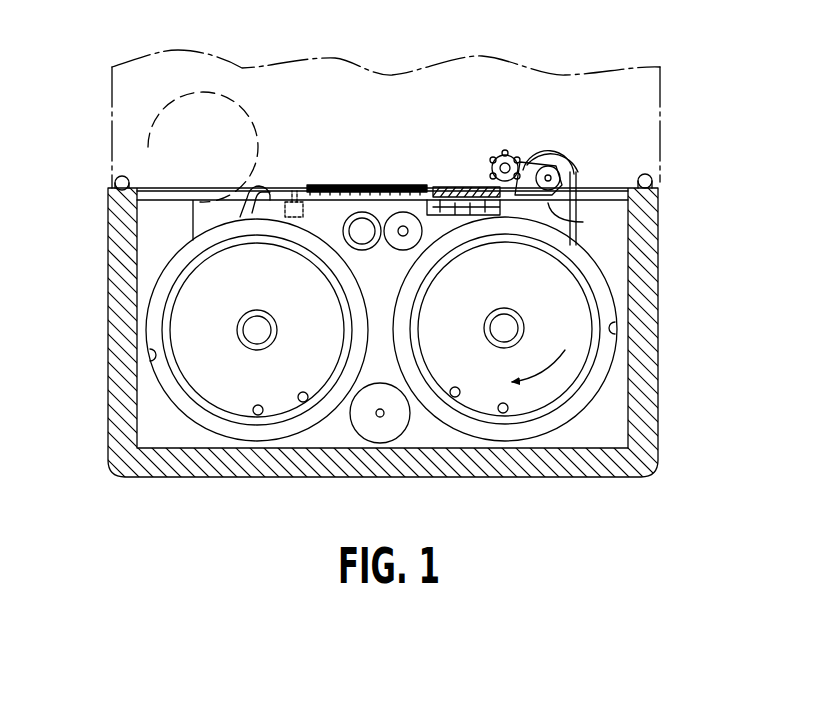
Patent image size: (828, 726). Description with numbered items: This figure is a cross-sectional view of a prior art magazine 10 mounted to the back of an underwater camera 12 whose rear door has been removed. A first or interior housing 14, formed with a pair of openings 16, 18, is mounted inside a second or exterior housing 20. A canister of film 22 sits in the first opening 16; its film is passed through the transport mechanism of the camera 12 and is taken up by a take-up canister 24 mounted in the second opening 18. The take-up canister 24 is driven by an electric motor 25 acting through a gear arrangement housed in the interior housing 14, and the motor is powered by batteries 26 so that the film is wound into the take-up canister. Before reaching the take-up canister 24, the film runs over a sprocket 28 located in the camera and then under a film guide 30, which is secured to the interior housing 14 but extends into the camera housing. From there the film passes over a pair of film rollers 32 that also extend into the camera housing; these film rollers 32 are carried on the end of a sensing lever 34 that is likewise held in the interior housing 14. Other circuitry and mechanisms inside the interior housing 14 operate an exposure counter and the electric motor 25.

The magazine 10 is at (263, 498).
The underwater camera 12 is at (498, 75).
The interior housing 14 is at (160, 248).
The opening 16 is at (157, 356).
The second opening 18 is at (615, 338).
The exterior housing 20 is at (113, 345).
The canister of film 22 is at (257, 330).
The take-up canister 24 is at (505, 329).
The electric motor 25 is at (381, 430).
The batteries 26 is at (362, 240).
The sprocket 28 is at (508, 153).
The film guide 30 is at (553, 150).
The film rollers 32 is at (565, 163).
The sensing lever 34 is at (583, 222).